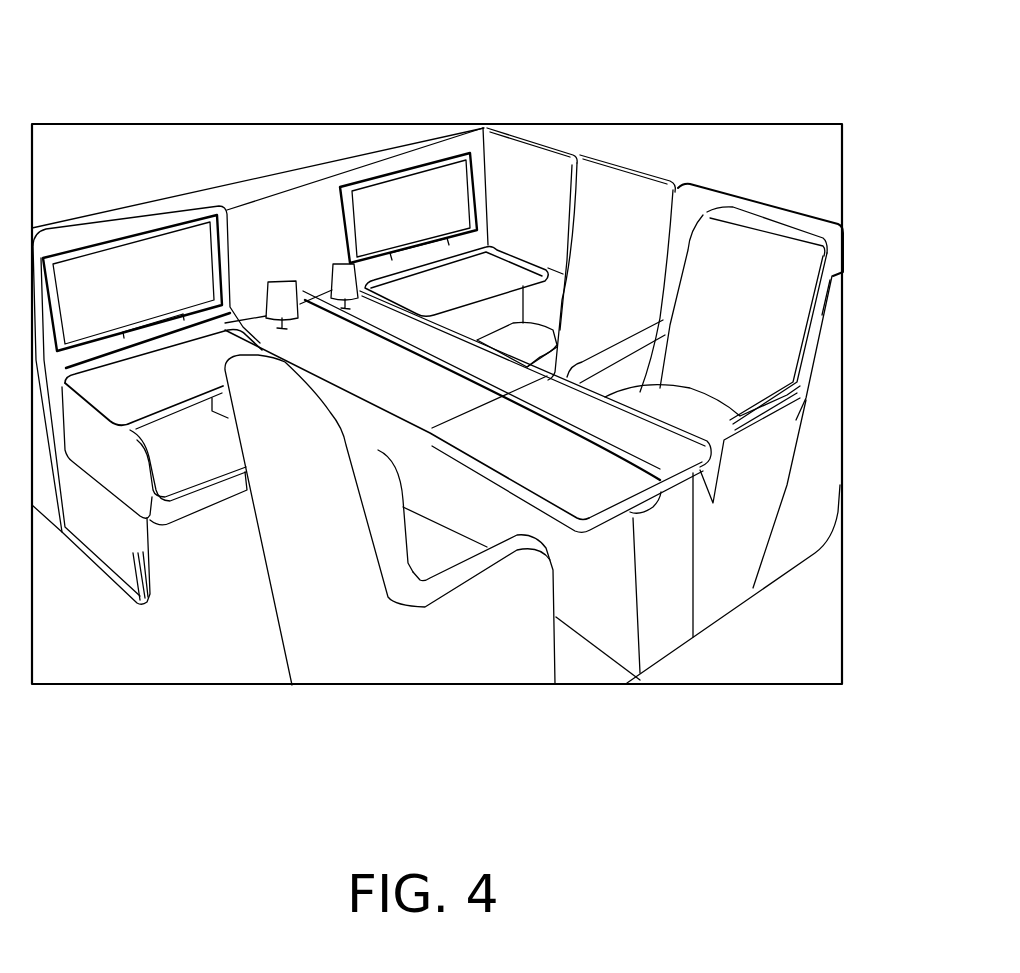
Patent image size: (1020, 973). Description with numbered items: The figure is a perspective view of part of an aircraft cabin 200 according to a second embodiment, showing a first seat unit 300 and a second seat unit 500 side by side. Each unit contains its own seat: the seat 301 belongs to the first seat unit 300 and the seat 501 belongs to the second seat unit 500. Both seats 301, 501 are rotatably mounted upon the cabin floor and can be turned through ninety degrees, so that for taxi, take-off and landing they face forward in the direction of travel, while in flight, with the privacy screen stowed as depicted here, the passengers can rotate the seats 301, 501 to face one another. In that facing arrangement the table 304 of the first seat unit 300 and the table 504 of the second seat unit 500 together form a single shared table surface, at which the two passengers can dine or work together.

The aircraft cabin 200 is at (137, 108).
The first seat unit 300 is at (710, 147).
The seat 301 is at (785, 487).
The table 304 is at (633, 435).
The second seat unit 500 is at (207, 660).
The seat 501 is at (485, 650).
The table 504 is at (553, 468).